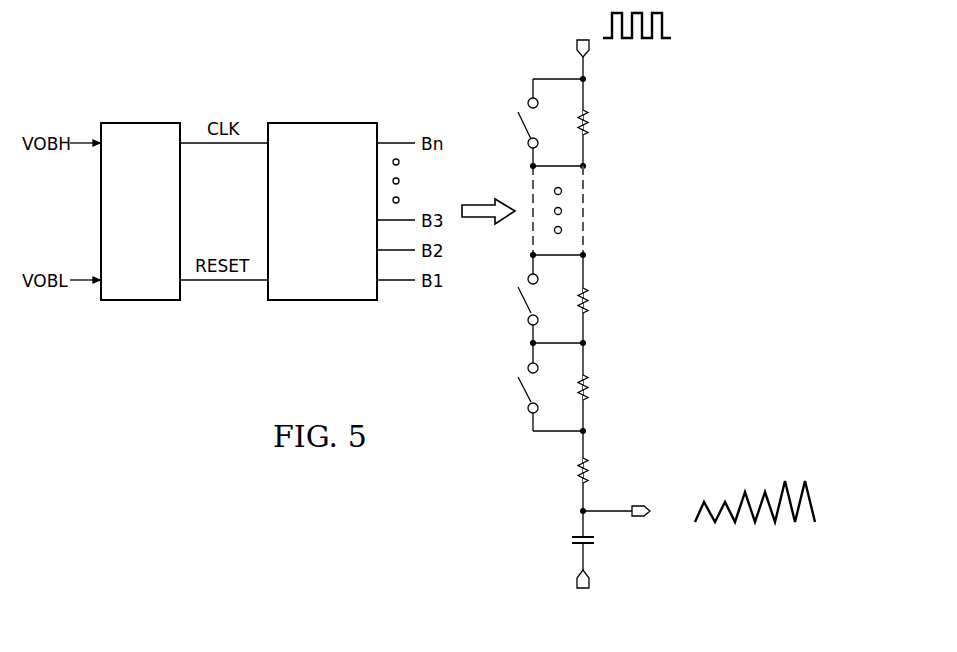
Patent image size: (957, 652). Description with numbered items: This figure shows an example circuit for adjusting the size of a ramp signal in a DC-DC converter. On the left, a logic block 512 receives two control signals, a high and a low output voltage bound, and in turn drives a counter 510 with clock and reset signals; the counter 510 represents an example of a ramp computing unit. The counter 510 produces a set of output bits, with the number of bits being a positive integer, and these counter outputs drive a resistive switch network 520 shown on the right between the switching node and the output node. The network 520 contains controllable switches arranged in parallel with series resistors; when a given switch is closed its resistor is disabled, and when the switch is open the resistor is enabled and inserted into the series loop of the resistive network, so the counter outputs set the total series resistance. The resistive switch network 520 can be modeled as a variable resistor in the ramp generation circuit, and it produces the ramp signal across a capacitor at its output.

The counter 510 is at (342, 240).
The logic block 512 is at (160, 239).
The resistive switch network 520 is at (616, 90).